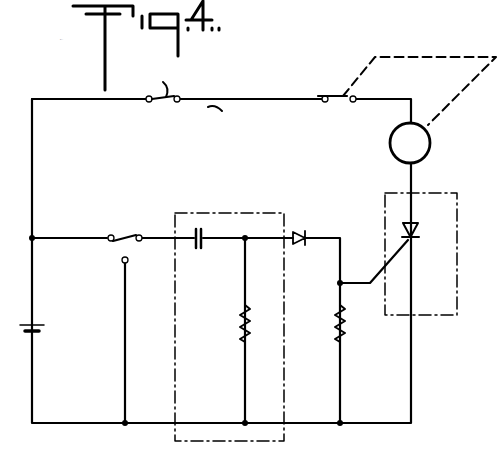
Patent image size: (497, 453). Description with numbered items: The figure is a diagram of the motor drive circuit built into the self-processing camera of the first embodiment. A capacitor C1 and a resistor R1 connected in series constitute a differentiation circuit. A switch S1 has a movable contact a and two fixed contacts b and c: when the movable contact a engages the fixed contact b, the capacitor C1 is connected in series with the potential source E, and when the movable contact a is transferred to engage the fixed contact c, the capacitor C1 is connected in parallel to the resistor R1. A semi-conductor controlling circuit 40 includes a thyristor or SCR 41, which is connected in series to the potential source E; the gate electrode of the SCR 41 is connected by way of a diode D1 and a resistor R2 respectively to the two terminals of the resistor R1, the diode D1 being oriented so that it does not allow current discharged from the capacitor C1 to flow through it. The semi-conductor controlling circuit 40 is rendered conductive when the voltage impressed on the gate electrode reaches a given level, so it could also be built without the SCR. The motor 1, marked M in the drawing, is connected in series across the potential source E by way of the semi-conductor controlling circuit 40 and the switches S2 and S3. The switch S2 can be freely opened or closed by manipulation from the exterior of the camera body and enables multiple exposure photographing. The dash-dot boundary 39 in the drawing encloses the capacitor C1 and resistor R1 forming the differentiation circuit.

The motor 1 is at (429, 143).
The motor symbol M is at (432, 147).
The timing circuit block 39 is at (221, 213).
The semi-conductor controlling circuit 40 is at (470, 259).
The thyristor or SCR 41 is at (419, 232).
The switch S1 is at (122, 224).
The switch S2 is at (181, 88).
The switch S3 is at (330, 104).
The movable contact a is at (132, 232).
The fixed contact b is at (110, 234).
The fixed contact c is at (121, 263).
The capacitor C1 is at (198, 251).
The resistor R1 is at (240, 326).
The resistor R2 is at (336, 328).
The diode D1 is at (298, 231).
The potential source E is at (47, 328).